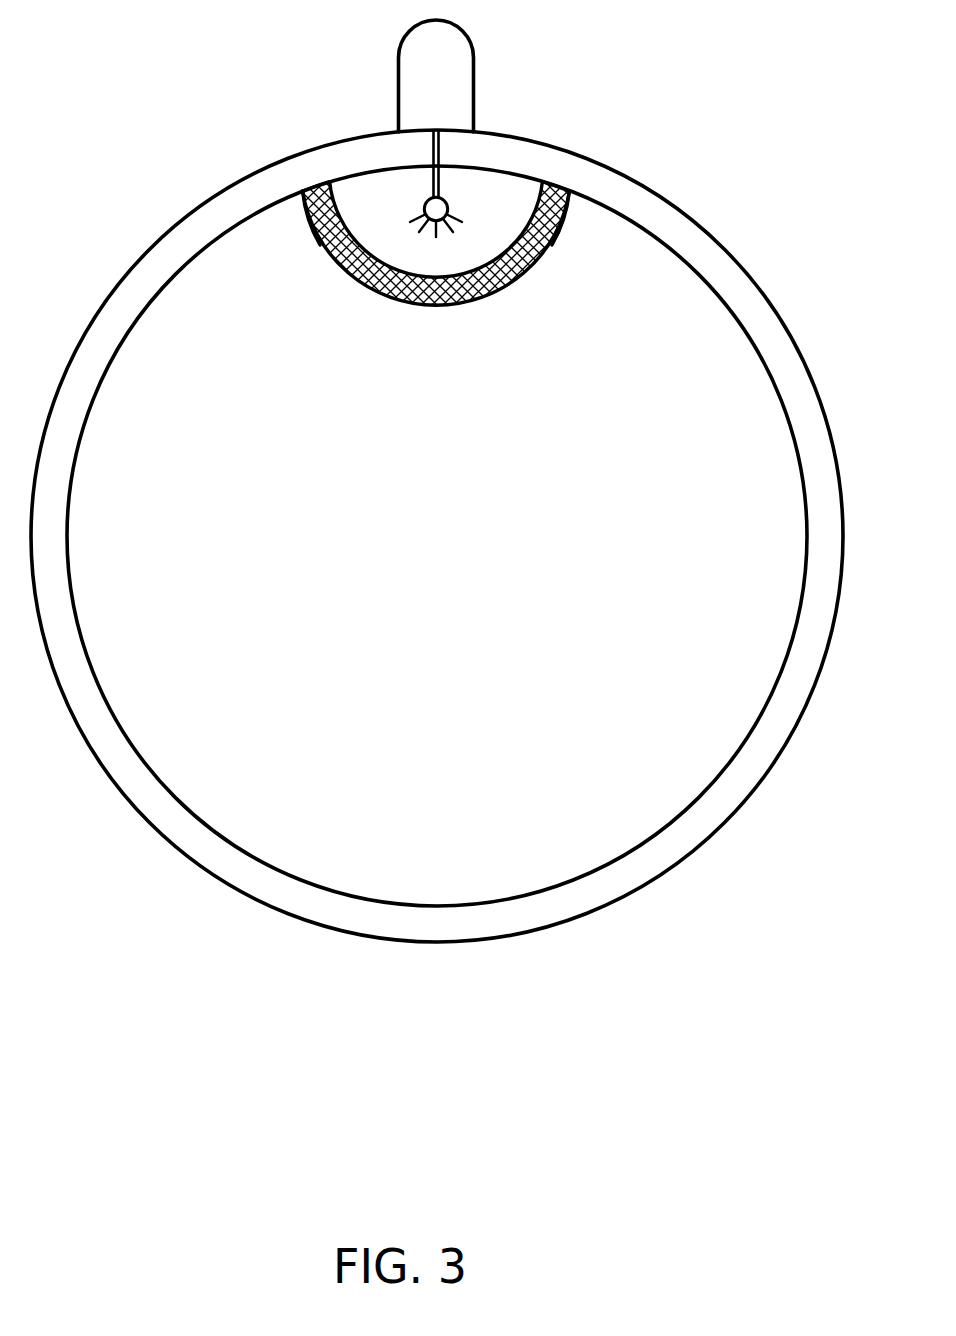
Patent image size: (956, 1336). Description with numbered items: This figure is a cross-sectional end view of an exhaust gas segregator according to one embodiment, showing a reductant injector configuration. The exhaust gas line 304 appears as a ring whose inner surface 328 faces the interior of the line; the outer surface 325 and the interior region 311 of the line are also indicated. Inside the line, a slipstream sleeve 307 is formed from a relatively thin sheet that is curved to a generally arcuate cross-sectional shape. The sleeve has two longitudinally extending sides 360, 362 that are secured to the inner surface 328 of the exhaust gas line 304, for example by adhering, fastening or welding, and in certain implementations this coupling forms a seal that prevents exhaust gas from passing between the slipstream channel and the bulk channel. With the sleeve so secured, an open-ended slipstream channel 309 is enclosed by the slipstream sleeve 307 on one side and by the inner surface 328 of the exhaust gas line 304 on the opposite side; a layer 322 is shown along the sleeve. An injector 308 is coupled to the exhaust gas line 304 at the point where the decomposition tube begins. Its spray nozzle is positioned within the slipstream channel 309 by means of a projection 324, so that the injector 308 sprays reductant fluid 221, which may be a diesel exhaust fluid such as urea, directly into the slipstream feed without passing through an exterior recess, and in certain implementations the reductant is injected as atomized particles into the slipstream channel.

The exhaust gas line 304 is at (438, 508).
The outer surface of ring 325 is at (651, 190).
The inner surface 328 is at (742, 333).
The slipstream channel 309 is at (440, 216).
The slipstream sleeve 307 is at (436, 287).
The reflective layer 322 is at (428, 292).
The longitudinally extending side 360 is at (317, 187).
The longitudinally extending side 362 is at (555, 185).
The injector 308 is at (398, 67).
The projection 324 is at (440, 140).
The reductant fluid 221 is at (420, 222).
The interior opening 311 is at (489, 524).